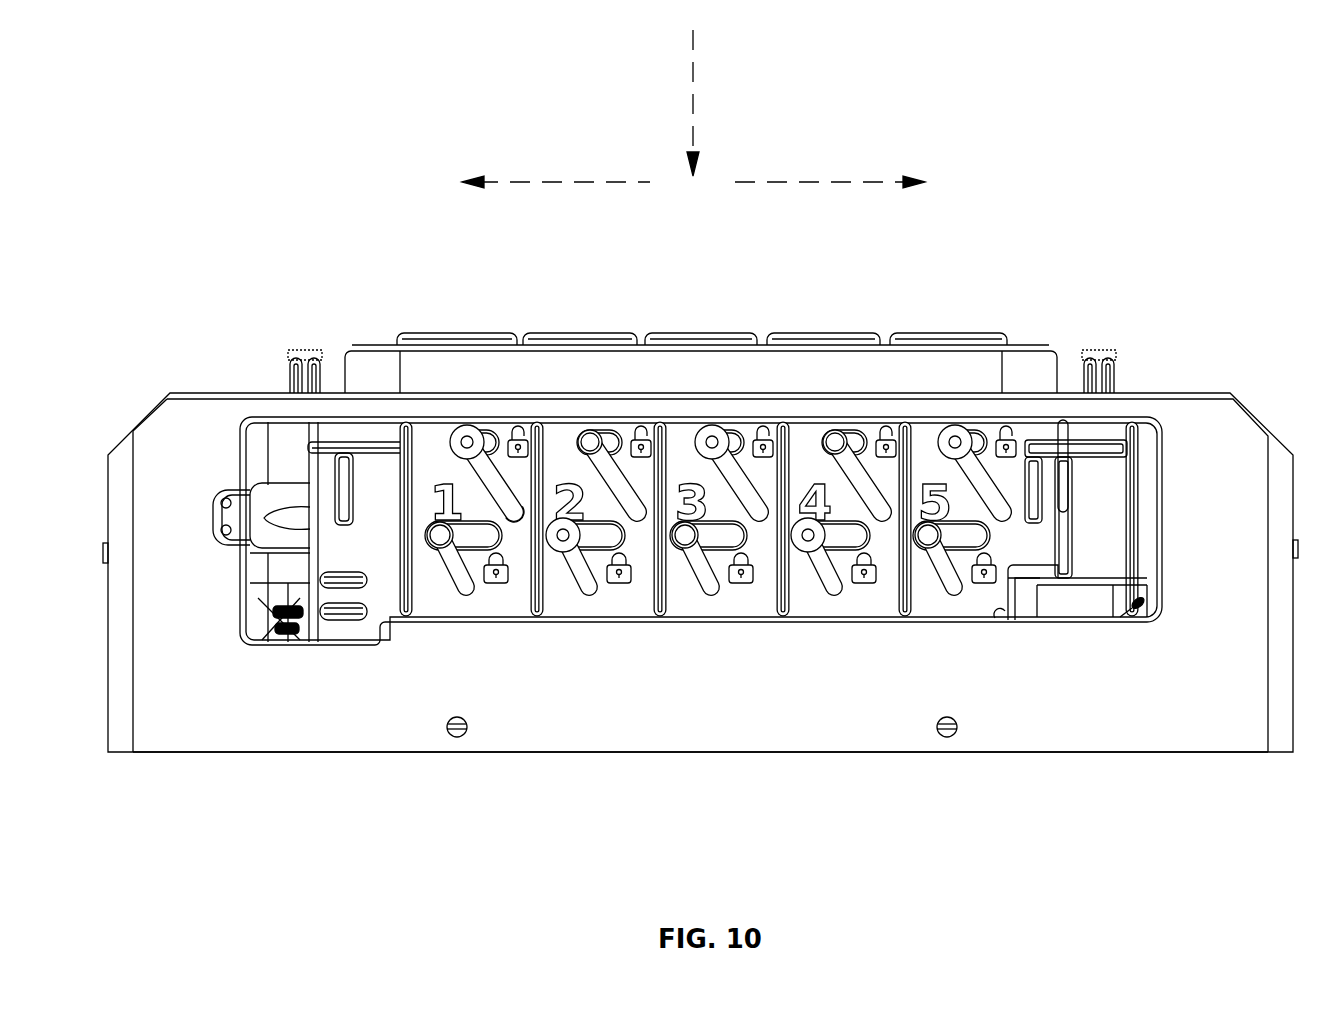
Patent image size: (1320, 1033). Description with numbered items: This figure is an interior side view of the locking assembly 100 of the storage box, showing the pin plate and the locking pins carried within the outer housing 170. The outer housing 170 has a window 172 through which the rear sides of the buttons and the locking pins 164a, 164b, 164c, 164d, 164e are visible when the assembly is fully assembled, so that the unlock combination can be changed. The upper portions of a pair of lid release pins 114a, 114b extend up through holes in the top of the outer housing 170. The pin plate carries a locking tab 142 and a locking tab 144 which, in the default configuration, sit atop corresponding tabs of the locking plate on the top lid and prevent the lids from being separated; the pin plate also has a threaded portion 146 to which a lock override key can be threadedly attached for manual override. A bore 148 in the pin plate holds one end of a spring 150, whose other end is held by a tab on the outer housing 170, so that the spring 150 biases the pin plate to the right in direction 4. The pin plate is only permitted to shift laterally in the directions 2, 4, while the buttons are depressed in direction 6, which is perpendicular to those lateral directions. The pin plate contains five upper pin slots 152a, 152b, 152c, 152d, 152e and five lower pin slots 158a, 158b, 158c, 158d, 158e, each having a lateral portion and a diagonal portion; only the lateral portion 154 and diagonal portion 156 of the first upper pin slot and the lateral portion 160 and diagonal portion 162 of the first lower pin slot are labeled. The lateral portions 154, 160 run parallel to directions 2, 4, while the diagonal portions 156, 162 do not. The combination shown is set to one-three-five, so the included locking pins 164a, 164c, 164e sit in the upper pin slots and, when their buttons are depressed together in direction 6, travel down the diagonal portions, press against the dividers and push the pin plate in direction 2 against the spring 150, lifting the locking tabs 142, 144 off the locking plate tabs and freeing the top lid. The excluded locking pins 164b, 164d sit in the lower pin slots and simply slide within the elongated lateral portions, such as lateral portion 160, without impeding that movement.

The locking assembly 100 is at (1182, 250).
The direction 2 is at (540, 183).
The direction 4 is at (820, 183).
The direction 6 is at (694, 78).
The lid release pin 114a is at (300, 353).
The lid release pin 114b is at (1090, 353).
The locking tab 142 is at (368, 448).
The locking tab 144 is at (1103, 447).
The threaded portion 146 is at (260, 636).
The bore 148 is at (258, 497).
The spring 150 is at (213, 503).
The upper pin slot 152a is at (455, 463).
The upper pin slot 152b is at (570, 462).
The upper pin slot 152c is at (742, 466).
The upper pin slot 152d is at (862, 430).
The upper pin slot 152e is at (978, 432).
The lateral portion 154 is at (492, 437).
The diagonal portion 156 is at (512, 521).
The lower pin slot 158a is at (427, 548).
The lower pin slot 158b is at (557, 572).
The lower pin slot 158c is at (699, 592).
The lower pin slot 158d is at (812, 592).
The lower pin slot 158e is at (928, 592).
The lateral portion 160 is at (470, 547).
The diagonal portion 162 is at (458, 584).
The locking pin 164a is at (482, 433).
The locking pin 164b is at (571, 542).
The locking pin 164c is at (698, 426).
The locking pin 164d is at (821, 548).
The locking pin 164e is at (938, 430).
The outer housing 170 is at (358, 718).
The window 172 is at (1003, 614).